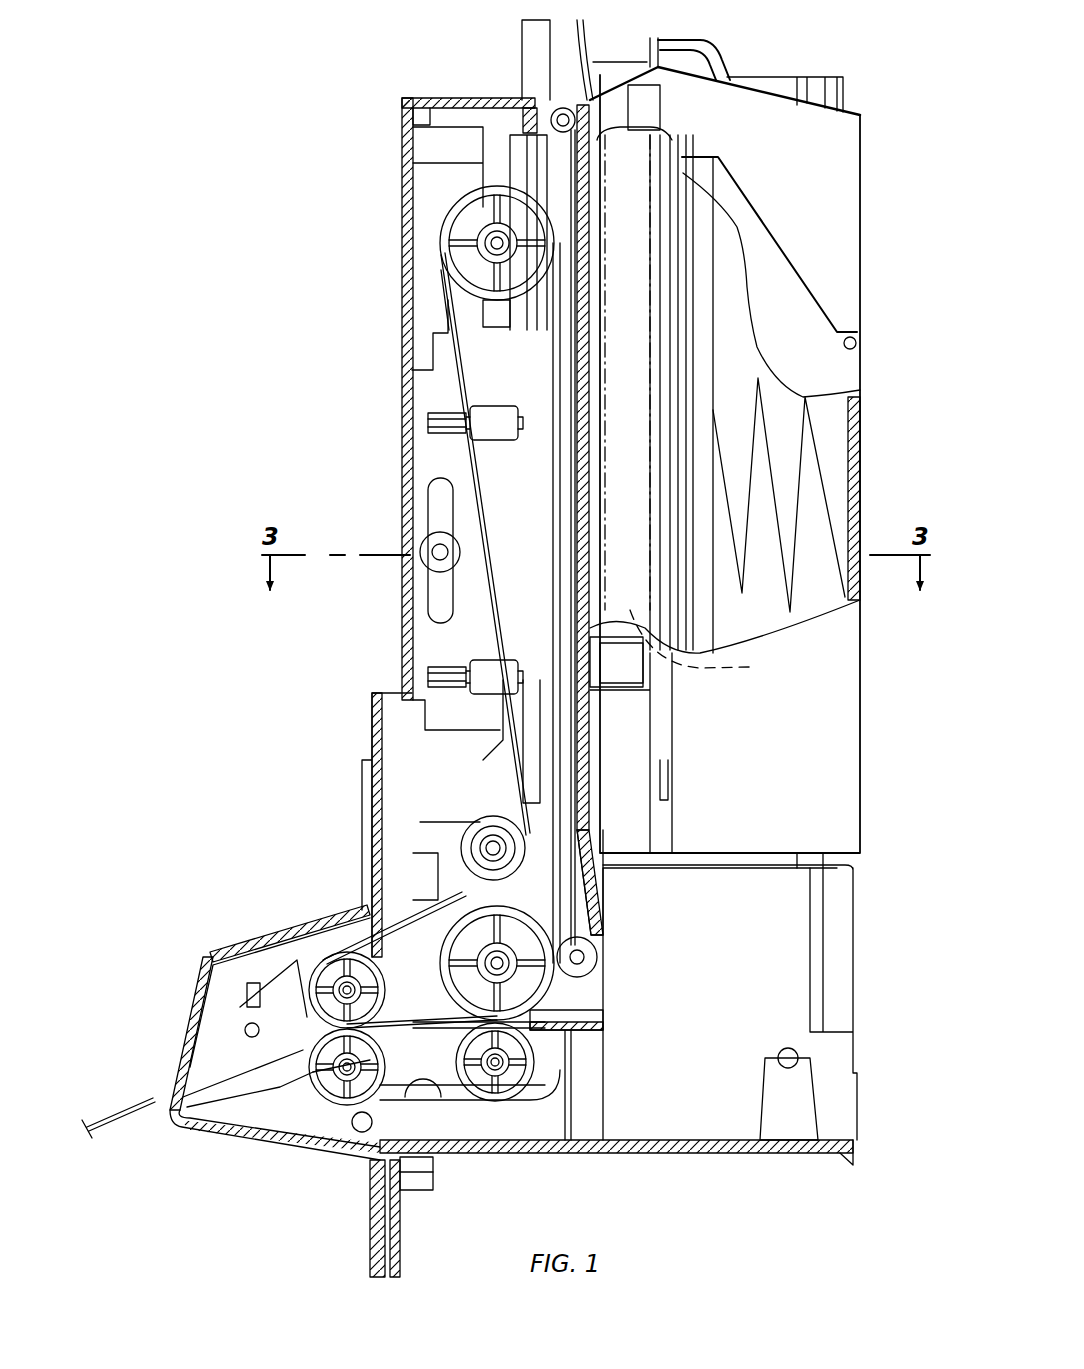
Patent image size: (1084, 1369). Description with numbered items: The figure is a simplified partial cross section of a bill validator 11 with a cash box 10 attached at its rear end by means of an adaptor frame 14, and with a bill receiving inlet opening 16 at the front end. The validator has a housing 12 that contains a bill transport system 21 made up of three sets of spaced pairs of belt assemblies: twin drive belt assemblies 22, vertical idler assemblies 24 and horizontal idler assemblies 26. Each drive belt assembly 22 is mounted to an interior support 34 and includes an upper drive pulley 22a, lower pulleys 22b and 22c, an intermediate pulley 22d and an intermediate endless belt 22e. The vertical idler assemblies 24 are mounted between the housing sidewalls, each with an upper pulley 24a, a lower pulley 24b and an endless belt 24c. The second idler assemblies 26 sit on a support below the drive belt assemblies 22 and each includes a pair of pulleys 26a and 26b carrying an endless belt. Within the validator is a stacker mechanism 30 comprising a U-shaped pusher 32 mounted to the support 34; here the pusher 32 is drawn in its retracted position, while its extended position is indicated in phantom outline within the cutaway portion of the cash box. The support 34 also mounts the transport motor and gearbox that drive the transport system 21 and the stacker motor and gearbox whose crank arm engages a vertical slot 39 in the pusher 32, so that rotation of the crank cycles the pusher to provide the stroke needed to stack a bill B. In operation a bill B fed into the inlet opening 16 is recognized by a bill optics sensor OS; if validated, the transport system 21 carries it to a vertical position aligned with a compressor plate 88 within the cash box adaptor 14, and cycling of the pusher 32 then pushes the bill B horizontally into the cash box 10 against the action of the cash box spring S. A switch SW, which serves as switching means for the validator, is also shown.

The cash box 10 is at (806, 70).
The bill validator 11 is at (333, 100).
The housing 12 is at (402, 157).
The adaptor frame 14 is at (624, 50).
The bill receiving inlet opening 16 is at (190, 1070).
The bill transport system 21 is at (450, 388).
The twin drive belt assemblies 22 is at (462, 455).
The upper drive pulley 22a is at (440, 265).
The lower pulley 22b is at (318, 968).
The lower pulley 22c is at (540, 1033).
The intermediate pulley 22d is at (460, 845).
The intermediate endless belt 22e is at (440, 303).
The vertical idler assemblies 24 is at (590, 725).
The upper pulley 24a is at (545, 118).
The lower pulley 24b is at (598, 957).
The endless belt 24c is at (603, 887).
The horizontal idler assemblies 26 is at (463, 1115).
The pulley 26a is at (267, 1103).
The pulley 26b is at (525, 1083).
The stacker mechanism 30 is at (458, 641).
The U-shaped pusher 32 is at (500, 364).
The interior support 34 is at (440, 185).
The vertical slot 39 is at (437, 497).
The compressor plate 88 is at (713, 310).
The bill B is at (700, 215).
The cash box spring S is at (750, 420).
The switch SW is at (577, 65).
The bill optics sensor OS is at (187, 1127).